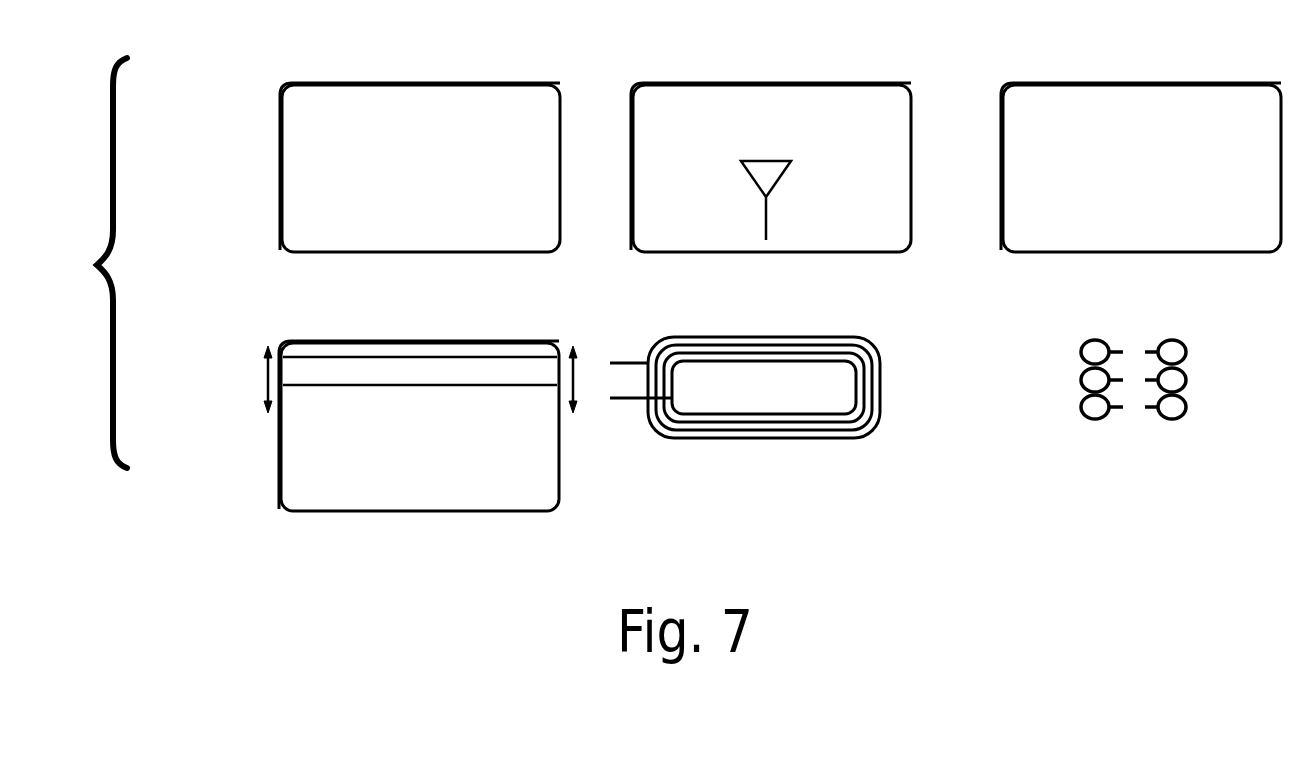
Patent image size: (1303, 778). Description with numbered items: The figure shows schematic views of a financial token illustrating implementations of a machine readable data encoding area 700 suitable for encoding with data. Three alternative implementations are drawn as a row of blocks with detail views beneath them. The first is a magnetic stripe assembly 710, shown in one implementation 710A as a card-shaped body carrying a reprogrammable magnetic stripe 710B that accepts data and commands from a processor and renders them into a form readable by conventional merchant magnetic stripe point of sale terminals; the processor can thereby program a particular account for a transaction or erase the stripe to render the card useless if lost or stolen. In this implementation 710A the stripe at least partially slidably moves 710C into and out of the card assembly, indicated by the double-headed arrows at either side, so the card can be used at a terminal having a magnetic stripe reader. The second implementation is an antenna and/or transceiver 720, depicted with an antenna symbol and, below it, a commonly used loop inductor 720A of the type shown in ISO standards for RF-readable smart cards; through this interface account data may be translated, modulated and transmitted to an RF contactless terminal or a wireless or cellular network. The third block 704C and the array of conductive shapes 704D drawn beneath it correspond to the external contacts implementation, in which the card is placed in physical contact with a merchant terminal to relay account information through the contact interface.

The data encoding area 700 is at (84, 263).
The magnetic stripe assembly 710 is at (446, 181).
The magnetic stripe assembly implementation 710A is at (270, 338).
The reprogrammable magnetic stripe 710B is at (357, 368).
The sliding movement 710C is at (264, 385).
The antenna and/or transceiver 720 is at (794, 142).
The loop inductor 720A is at (766, 440).
The chip module 704C is at (1181, 182).
The contact pads 704D is at (1178, 420).